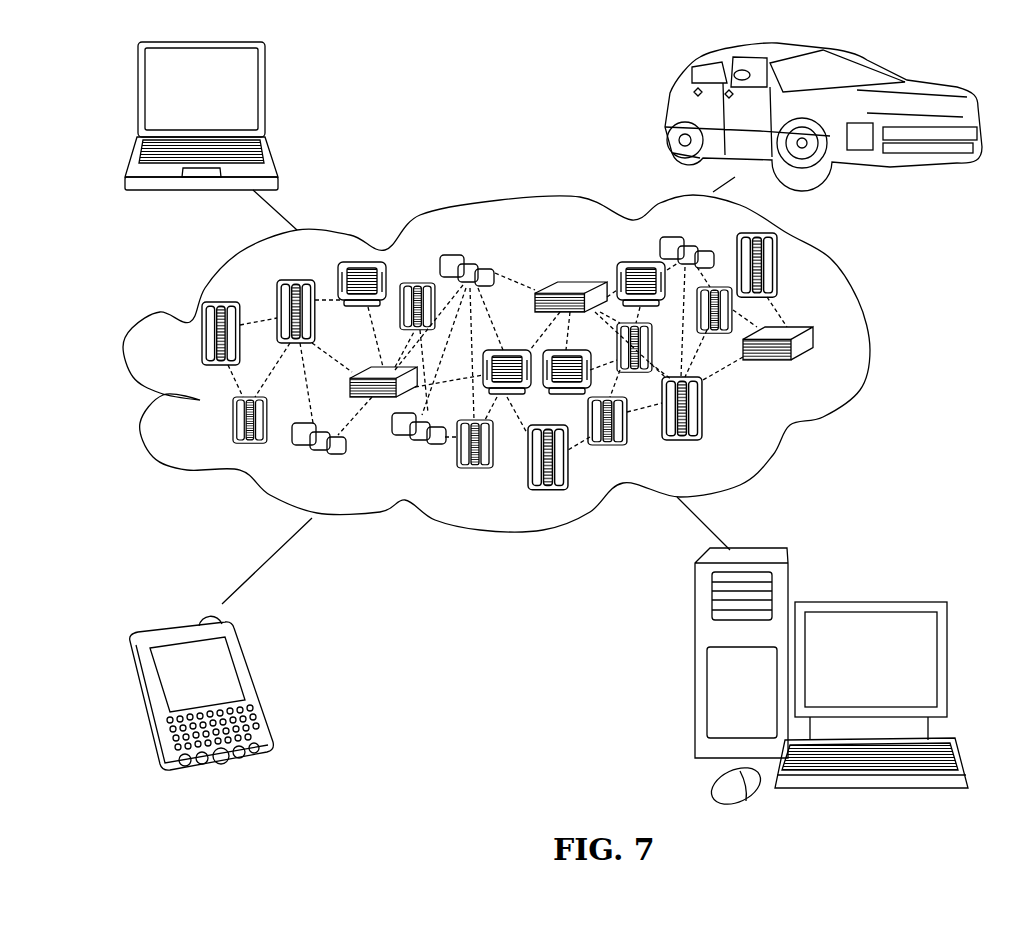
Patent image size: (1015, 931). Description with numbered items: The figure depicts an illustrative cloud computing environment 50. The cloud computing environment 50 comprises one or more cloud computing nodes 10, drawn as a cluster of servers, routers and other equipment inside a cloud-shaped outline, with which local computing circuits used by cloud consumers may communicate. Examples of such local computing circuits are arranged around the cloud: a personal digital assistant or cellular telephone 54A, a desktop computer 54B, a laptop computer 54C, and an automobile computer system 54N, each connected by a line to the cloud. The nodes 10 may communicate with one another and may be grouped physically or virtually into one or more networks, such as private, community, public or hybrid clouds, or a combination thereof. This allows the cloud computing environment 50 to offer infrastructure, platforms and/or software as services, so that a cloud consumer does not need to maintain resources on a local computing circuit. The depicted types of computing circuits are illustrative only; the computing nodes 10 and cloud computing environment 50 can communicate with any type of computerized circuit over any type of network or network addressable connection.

The cloud computing node 10 is at (818, 370).
The cloud computing environment 50 is at (524, 363).
The personal digital assistant or cellular telephone 54A is at (255, 687).
The desktop computer 54B is at (866, 602).
The laptop computer 54C is at (265, 95).
The automobile computer system 54N is at (670, 115).